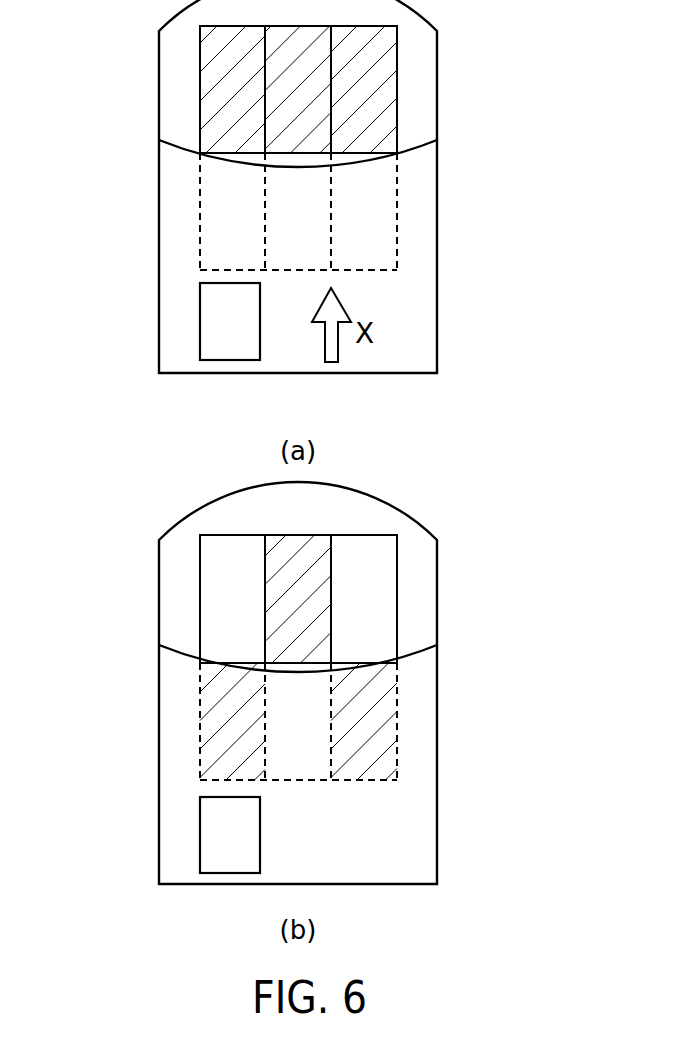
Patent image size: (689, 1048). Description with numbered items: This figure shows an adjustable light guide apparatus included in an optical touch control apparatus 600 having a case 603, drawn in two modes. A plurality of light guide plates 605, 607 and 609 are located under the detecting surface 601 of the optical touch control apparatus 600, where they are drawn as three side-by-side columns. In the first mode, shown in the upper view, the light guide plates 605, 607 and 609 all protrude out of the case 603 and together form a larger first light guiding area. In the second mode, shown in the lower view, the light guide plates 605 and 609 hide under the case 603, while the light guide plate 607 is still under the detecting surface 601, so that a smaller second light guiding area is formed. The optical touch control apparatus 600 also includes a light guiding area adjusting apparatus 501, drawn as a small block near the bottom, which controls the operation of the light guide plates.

The optical touch control apparatus 600 is at (437, 110).
The detecting surface 601 is at (397, 83).
The case 603 is at (437, 258).
The light guide plate 605 is at (215, 107).
The light guide plate 607 is at (283, 68).
The light guide plate 609 is at (378, 55).
The light guiding area adjusting apparatus 501 is at (200, 324).